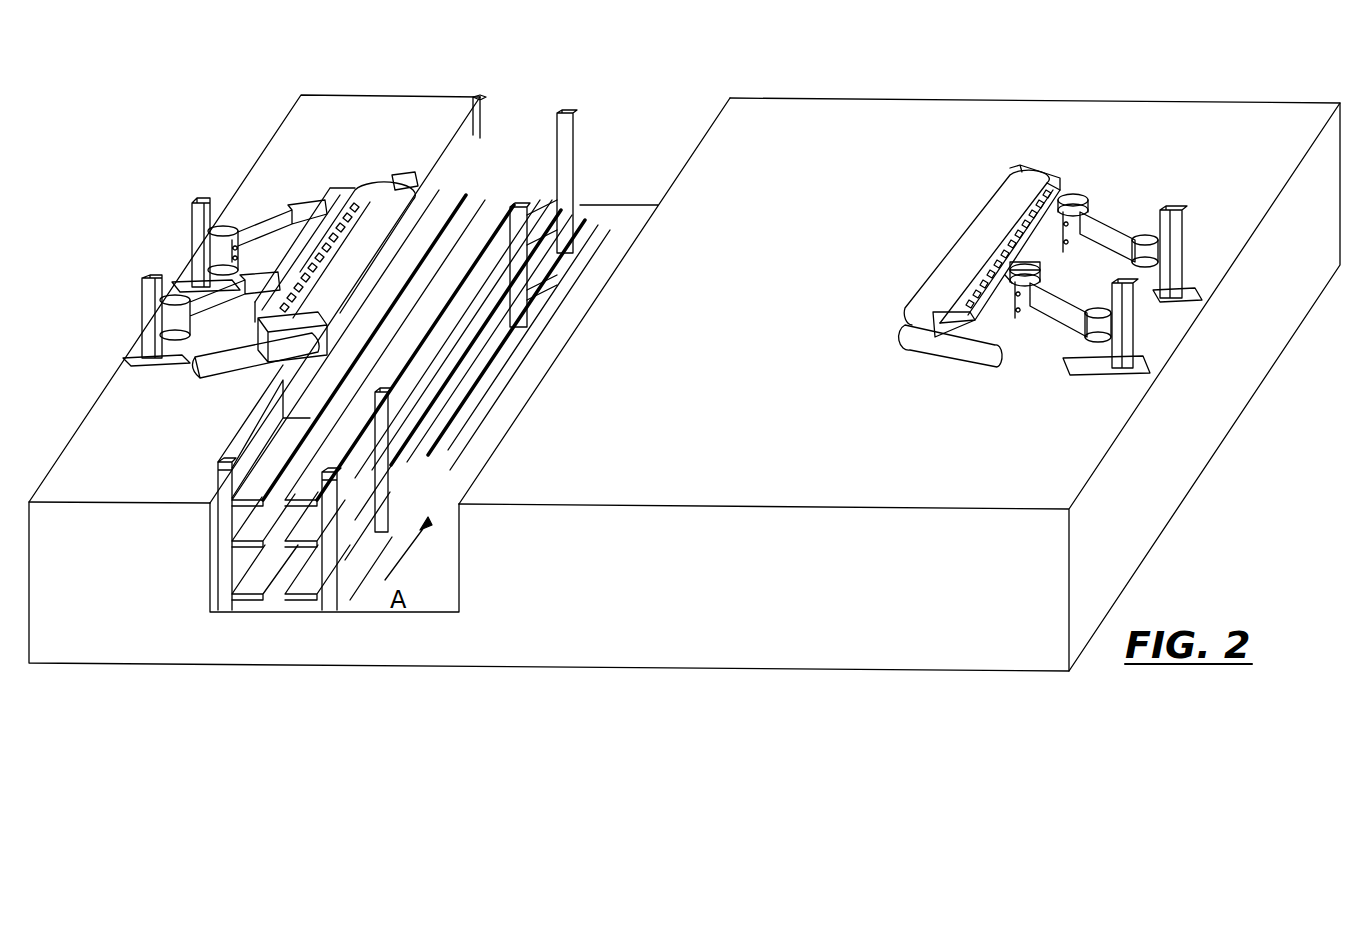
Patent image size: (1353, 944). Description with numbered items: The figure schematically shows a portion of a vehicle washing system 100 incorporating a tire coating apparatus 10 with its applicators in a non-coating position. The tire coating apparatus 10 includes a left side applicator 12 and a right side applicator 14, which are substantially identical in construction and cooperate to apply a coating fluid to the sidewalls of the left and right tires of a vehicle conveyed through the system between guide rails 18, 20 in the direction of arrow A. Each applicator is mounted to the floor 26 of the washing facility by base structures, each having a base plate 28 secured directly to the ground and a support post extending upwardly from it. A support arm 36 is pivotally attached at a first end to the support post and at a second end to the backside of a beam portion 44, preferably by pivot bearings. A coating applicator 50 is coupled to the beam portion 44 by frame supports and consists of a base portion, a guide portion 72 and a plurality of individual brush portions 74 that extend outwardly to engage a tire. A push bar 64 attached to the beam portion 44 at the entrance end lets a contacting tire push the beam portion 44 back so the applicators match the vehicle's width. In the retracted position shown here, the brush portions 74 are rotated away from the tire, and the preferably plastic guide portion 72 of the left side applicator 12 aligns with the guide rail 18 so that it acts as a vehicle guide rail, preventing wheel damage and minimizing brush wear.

The vehicle washing system 100 is at (596, 77).
The tire coating apparatus 10 is at (246, 118).
The left side applicator 12 is at (333, 182).
The right side applicator 14 is at (1057, 152).
The guide rail 18 is at (228, 458).
The guide rail 20 is at (180, 195).
The floor 26 is at (733, 331).
The base plate 28 is at (166, 362).
The support arm 36 is at (262, 220).
The beam portion 44 is at (1027, 253).
The coating applicator 50 is at (403, 176).
The push bar 64 is at (236, 375).
The guide portion 72 is at (385, 222).
The brush portions 74 is at (1013, 222).